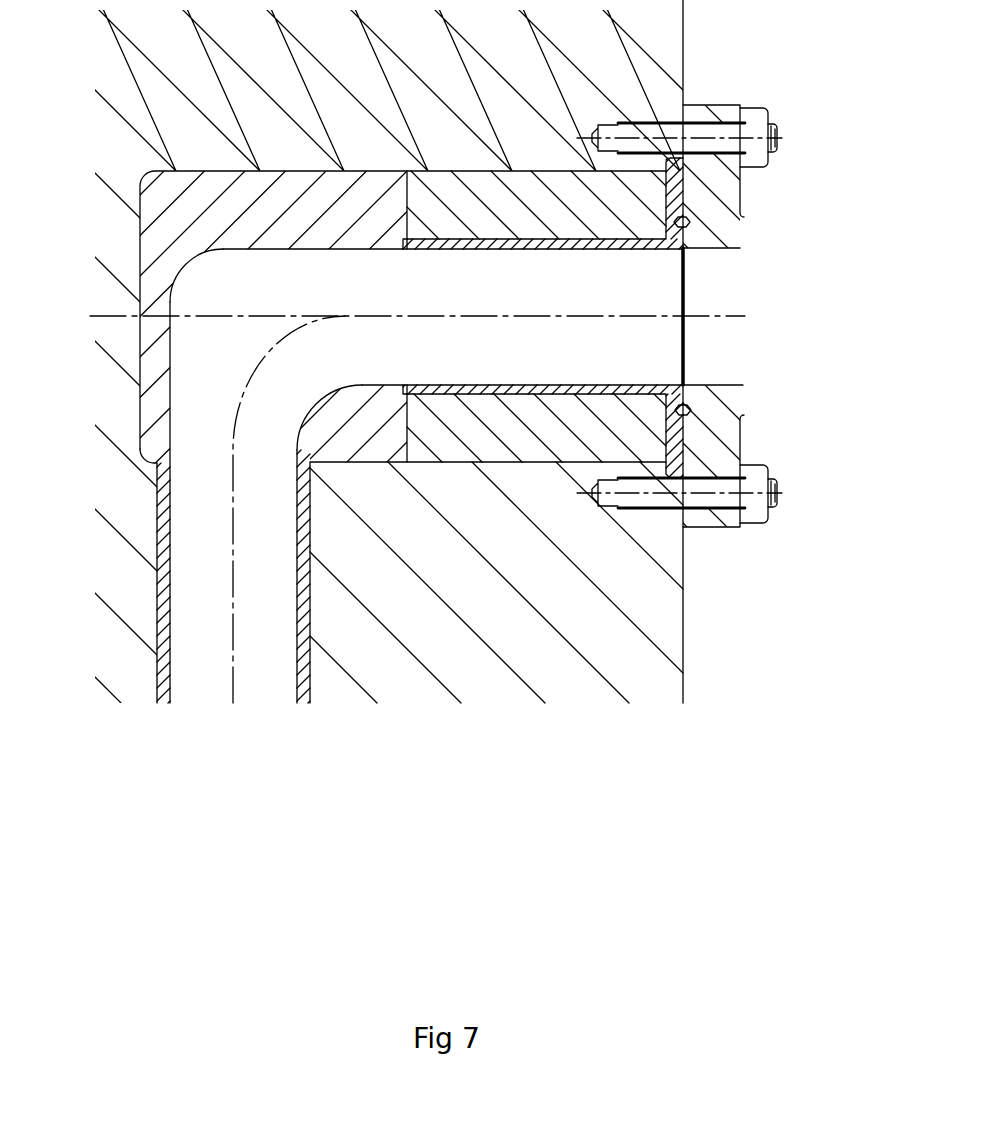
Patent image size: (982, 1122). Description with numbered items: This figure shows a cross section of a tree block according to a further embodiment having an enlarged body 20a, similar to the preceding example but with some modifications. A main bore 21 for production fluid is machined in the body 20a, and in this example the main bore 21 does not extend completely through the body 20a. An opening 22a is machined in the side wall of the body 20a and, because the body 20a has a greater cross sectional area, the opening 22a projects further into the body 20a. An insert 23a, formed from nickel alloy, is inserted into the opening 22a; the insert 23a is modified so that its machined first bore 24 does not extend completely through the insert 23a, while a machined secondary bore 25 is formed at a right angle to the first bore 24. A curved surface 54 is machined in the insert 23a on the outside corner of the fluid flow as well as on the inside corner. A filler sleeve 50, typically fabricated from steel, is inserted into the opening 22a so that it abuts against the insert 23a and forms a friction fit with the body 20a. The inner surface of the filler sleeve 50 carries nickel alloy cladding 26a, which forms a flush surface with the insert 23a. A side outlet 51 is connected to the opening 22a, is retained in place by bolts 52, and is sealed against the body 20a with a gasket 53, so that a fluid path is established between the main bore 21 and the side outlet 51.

The body 20a is at (490, 620).
The main bore 21 is at (205, 676).
The opening 22a is at (610, 283).
The insert 23a is at (333, 436).
The first bore 24 is at (232, 393).
The secondary bore 25 is at (342, 301).
The nickel alloy cladding 26a is at (447, 243).
The filler sleeve 50 is at (463, 432).
The side outlet 51 is at (710, 435).
The bolts 52 is at (755, 115).
The gasket 53 is at (690, 223).
The curved surface 54 is at (185, 265).